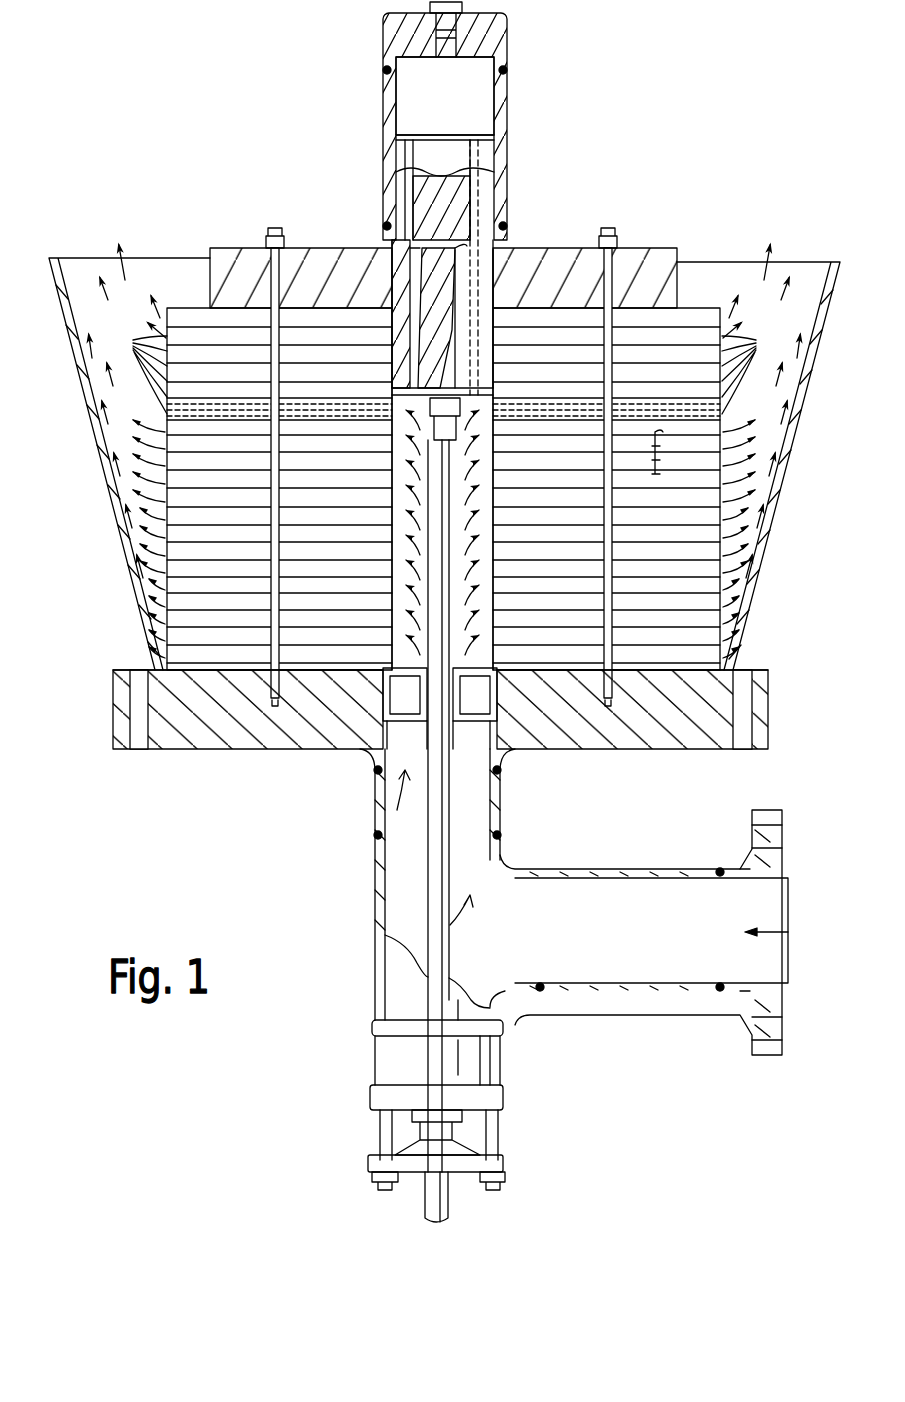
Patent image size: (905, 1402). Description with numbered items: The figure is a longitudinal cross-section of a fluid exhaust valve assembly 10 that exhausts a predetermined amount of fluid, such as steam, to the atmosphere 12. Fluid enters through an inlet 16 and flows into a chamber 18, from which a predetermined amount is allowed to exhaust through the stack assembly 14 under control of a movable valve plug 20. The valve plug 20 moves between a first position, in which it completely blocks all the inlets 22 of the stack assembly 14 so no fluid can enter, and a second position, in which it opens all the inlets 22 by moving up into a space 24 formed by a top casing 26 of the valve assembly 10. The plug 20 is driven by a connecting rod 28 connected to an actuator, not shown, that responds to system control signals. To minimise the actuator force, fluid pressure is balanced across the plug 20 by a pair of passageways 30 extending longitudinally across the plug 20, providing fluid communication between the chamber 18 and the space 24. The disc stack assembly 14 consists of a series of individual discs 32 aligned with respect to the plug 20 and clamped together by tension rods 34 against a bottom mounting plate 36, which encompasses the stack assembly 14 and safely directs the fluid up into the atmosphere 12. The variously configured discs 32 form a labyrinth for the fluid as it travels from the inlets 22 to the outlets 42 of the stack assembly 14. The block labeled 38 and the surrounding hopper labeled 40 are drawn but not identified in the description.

The fluid exhaust valve assembly 10 is at (640, 127).
The atmosphere 12 is at (742, 197).
The stack assembly 14 is at (738, 572).
The inlet 16 is at (612, 991).
The chamber 18 is at (478, 639).
The valve plug 20 is at (458, 224).
The inlets 22 is at (400, 495).
The space 24 is at (458, 107).
The top casing 26 is at (506, 111).
The connecting rod 28 is at (440, 772).
The passageways 30 is at (395, 184).
The discs 32 is at (672, 505).
The tension rods 34 is at (280, 566).
The bottom mounting plate 36 is at (210, 727).
The top plate 38 is at (328, 297).
The hopper 40 is at (780, 500).
The outlets 42 is at (444, 450).